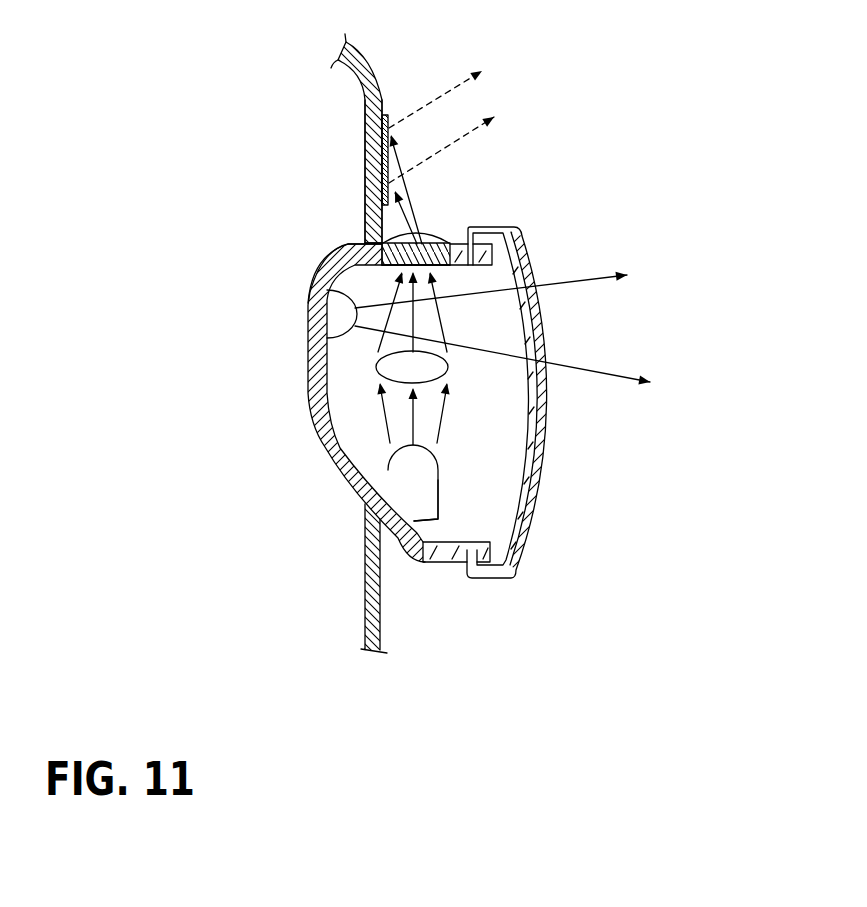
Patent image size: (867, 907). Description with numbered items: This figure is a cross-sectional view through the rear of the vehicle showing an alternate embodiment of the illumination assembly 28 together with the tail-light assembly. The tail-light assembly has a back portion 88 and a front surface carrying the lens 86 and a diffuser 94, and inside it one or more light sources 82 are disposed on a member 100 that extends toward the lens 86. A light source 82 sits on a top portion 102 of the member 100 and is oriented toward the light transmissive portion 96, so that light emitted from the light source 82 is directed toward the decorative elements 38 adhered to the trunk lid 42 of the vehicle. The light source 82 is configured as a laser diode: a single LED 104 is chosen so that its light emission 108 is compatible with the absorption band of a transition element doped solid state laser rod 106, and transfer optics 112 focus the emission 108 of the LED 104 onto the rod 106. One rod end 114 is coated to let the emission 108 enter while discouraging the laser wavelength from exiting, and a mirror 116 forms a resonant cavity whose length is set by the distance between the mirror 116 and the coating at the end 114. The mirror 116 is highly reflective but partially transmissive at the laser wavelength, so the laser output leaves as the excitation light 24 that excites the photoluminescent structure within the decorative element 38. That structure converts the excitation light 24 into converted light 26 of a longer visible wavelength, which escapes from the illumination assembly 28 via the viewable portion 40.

The excitation light 24 is at (563, 282).
The converted light 26 is at (460, 88).
The illumination assembly 28 is at (386, 106).
The decorative element 38 is at (391, 116).
The viewable portion 40 is at (399, 163).
The trunk lid 42 is at (377, 65).
The light source 82 is at (330, 311).
The lens 86 is at (535, 526).
The back portion 88 is at (308, 370).
The diffuser 94 is at (536, 487).
The light transmissive portion 96 is at (440, 232).
The member 100 is at (405, 497).
The top portion 102 is at (446, 455).
The LED 104 is at (413, 458).
The solid state laser rod 106 is at (362, 244).
The light emission 108 is at (387, 273).
The transfer optics 112 is at (376, 367).
The rod end 114 is at (386, 284).
The mirror 116 is at (366, 238).